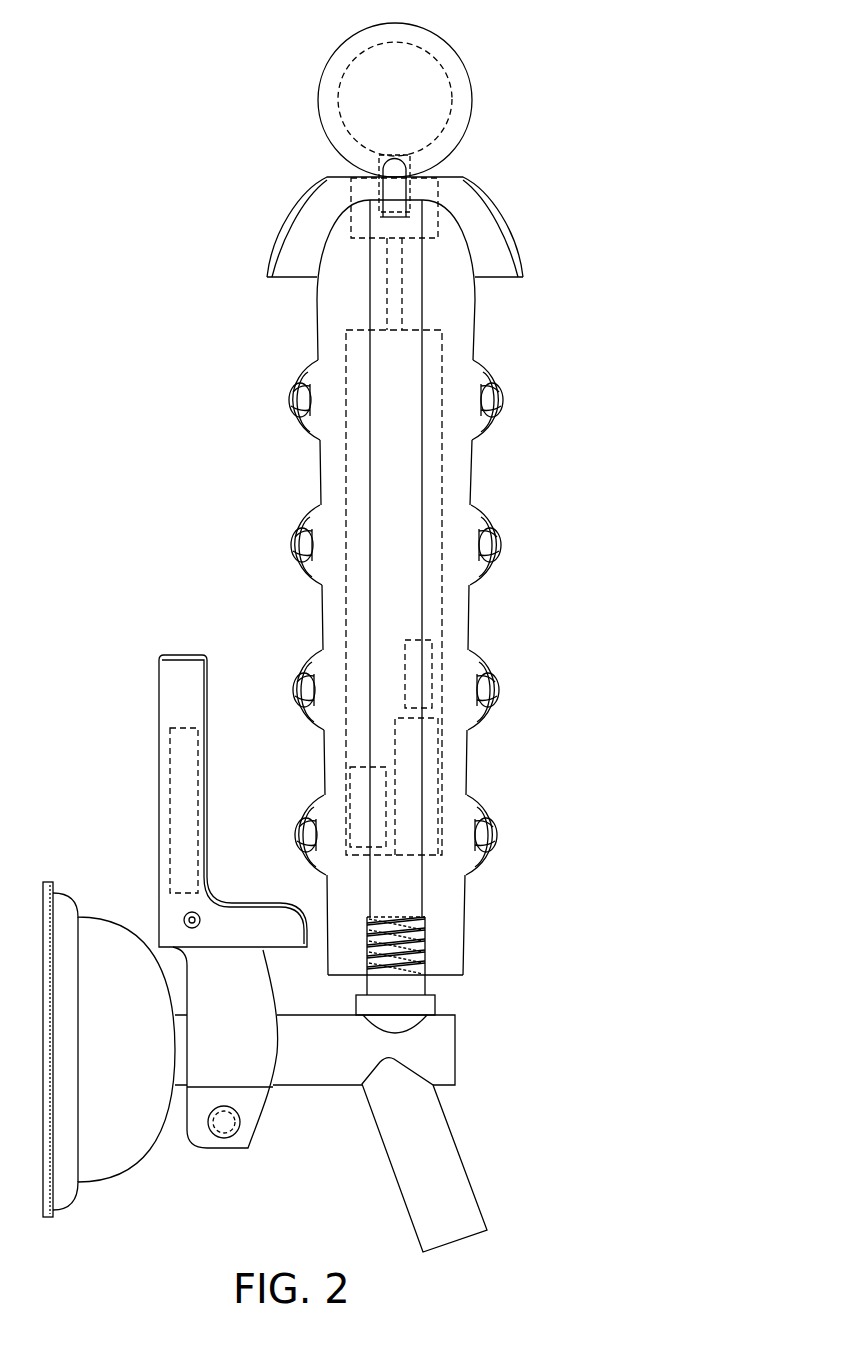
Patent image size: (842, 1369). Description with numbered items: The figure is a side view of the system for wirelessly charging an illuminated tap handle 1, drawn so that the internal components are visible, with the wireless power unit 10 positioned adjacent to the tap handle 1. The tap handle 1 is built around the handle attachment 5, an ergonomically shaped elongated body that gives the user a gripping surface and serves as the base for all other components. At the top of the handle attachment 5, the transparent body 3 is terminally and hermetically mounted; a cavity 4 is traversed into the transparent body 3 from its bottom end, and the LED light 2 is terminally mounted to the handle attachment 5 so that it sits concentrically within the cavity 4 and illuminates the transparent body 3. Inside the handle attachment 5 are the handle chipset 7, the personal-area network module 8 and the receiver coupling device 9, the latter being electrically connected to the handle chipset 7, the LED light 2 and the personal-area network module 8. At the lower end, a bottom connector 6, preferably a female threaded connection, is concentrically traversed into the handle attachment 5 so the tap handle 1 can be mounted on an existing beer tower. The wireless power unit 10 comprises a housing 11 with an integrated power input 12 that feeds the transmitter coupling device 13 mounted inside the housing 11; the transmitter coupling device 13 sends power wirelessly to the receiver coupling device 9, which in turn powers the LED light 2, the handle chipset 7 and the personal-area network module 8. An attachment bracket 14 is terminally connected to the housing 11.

The tap handle 1 is at (530, 623).
The LED light 2 is at (397, 162).
The transparent body 3 is at (466, 112).
The cavity 4 is at (352, 68).
The handle attachment 5 is at (466, 487).
The bottom connector 6 is at (418, 929).
The handle chipset 7 is at (413, 641).
The personal-area network module 8 is at (433, 745).
The receiver coupling device 9 is at (353, 785).
The wireless power unit 10 is at (178, 614).
The housing 11 is at (170, 700).
The power input 12 is at (184, 918).
The transmitter coupling device 13 is at (177, 802).
The attachment bracket 14 is at (279, 1105).